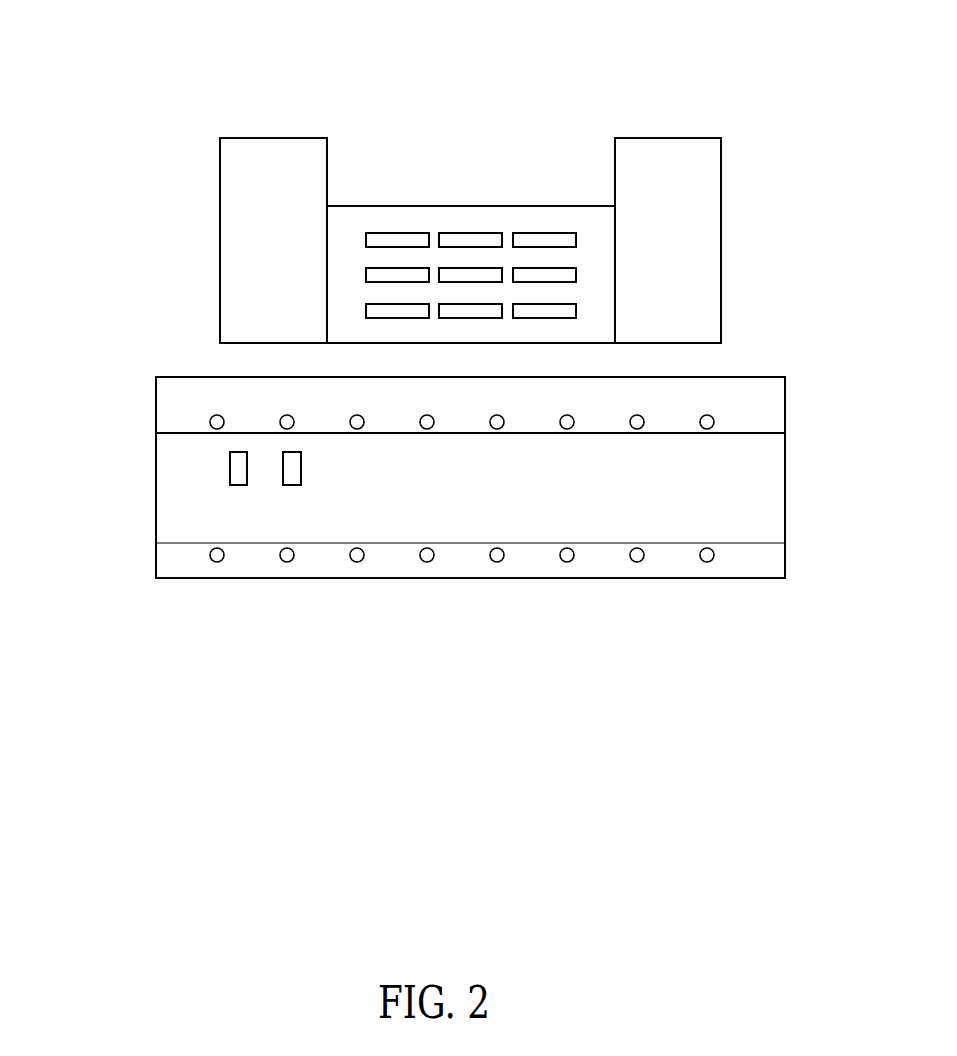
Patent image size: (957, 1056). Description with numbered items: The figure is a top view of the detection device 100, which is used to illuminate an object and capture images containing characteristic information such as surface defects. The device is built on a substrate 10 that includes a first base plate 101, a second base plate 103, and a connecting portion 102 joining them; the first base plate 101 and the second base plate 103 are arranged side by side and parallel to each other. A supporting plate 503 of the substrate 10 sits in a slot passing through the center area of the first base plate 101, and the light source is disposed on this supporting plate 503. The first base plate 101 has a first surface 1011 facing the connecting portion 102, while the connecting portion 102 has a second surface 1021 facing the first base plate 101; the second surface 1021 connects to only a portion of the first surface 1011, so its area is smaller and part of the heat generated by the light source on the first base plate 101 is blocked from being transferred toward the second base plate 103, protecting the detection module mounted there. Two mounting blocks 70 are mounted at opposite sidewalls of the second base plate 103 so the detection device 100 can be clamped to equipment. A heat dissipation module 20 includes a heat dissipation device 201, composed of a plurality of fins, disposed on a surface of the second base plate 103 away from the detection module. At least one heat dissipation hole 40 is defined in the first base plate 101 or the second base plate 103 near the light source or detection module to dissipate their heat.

The detection device 100 is at (282, 46).
The substrate 10 is at (87, 298).
The first base plate 101 is at (197, 403).
The connecting portion 102 is at (345, 366).
The second base plate 103 is at (345, 327).
The first surface 1011 is at (681, 376).
The second surface 1021 is at (531, 376).
The heat dissipation module 20 is at (575, 150).
The heat dissipation device 201 is at (463, 236).
The heat dissipation hole 40 is at (709, 415).
The mounting blocks 70 is at (232, 200).
The supporting plate 503 is at (765, 488).